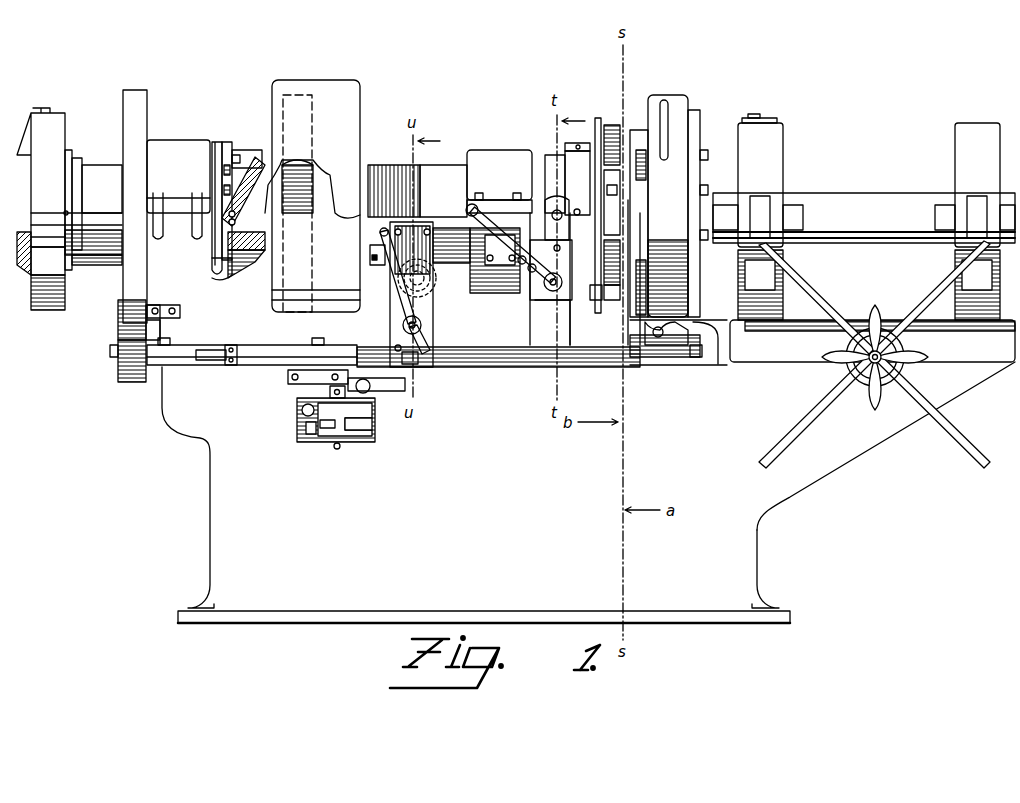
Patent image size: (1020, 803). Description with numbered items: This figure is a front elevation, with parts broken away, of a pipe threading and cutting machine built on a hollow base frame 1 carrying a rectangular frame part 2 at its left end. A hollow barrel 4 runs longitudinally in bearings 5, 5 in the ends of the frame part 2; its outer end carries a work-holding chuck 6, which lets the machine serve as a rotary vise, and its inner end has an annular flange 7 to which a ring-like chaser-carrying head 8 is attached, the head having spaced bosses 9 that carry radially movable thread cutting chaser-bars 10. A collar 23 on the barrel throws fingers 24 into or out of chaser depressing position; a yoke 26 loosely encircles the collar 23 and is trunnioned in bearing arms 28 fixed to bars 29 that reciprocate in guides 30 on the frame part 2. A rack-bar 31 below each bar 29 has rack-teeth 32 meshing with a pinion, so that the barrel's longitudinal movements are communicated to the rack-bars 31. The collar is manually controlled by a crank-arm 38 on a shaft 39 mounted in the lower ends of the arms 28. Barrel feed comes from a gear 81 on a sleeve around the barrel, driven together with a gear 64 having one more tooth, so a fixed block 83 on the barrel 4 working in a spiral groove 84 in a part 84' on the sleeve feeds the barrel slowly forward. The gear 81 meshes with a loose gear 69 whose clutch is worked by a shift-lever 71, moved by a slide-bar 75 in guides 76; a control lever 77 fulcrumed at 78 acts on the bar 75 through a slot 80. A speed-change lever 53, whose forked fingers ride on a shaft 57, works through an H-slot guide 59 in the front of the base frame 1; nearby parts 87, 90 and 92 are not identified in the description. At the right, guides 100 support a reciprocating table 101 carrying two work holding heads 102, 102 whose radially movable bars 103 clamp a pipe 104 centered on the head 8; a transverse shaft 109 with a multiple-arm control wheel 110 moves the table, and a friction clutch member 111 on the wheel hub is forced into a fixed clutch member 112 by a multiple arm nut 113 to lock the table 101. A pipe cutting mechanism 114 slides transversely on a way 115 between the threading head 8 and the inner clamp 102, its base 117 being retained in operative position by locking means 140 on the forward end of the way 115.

The hollow base frame 1 is at (588, 411).
The rectangular frame part 2 is at (194, 315).
The hollow shaft or barrel 4 is at (266, 210).
The bearings 5 is at (339, 189).
The work-holding chuck 6 is at (42, 209).
The annular flange 7 is at (597, 130).
The chaser-carrying head 8 is at (598, 300).
The projections or bosses 9 is at (612, 128).
The thread cutting chaser-bars 10 is at (612, 300).
The collar 23 is at (577, 183).
The fingers 24 is at (579, 143).
The yoke 26 is at (550, 155).
The bearing arms 28 is at (546, 265).
The bars 29 is at (478, 262).
The guides 30 is at (485, 240).
The rack-bar 31 is at (452, 270).
The rack-teeth 32 is at (380, 268).
The crank-arm or lever 38 is at (520, 255).
The shaft 39 is at (561, 290).
The control lever 53 is at (301, 410).
The shaft 57 is at (388, 160).
The H-slot guide 59 is at (366, 432).
The gear 64 is at (300, 175).
The loose gear 69 is at (112, 360).
The shift-lever 71 is at (215, 350).
The slide-bar 75 is at (275, 358).
The guides 76 is at (228, 364).
The control lever 77 is at (400, 300).
The fulcrum 78 is at (422, 325).
The slot 80 is at (412, 364).
The gear 81 is at (116, 318).
The fixed block 83 is at (212, 248).
The spiral groove 84 is at (259, 198).
The grooved part 84' is at (243, 172).
The plate 87 is at (298, 432).
The catch 90 is at (326, 430).
The pawl 92 is at (310, 436).
The guides 100 is at (778, 328).
The table 101 is at (850, 328).
The work holding heads 102 is at (764, 178).
The radially movable bars 103 is at (755, 122).
The pipe or other work 104 is at (864, 191).
The transverse shaft 109 is at (852, 365).
The multiple-arm control wheel 110 is at (925, 320).
The friction clutch member 111 is at (845, 350).
The complemental clutch member 112 is at (905, 352).
The multiple arm nut 113 is at (870, 388).
The pipe cutting mechanism 114 is at (678, 230).
The way 115 is at (695, 348).
The base 117 is at (706, 309).
The locking means 140 is at (672, 335).